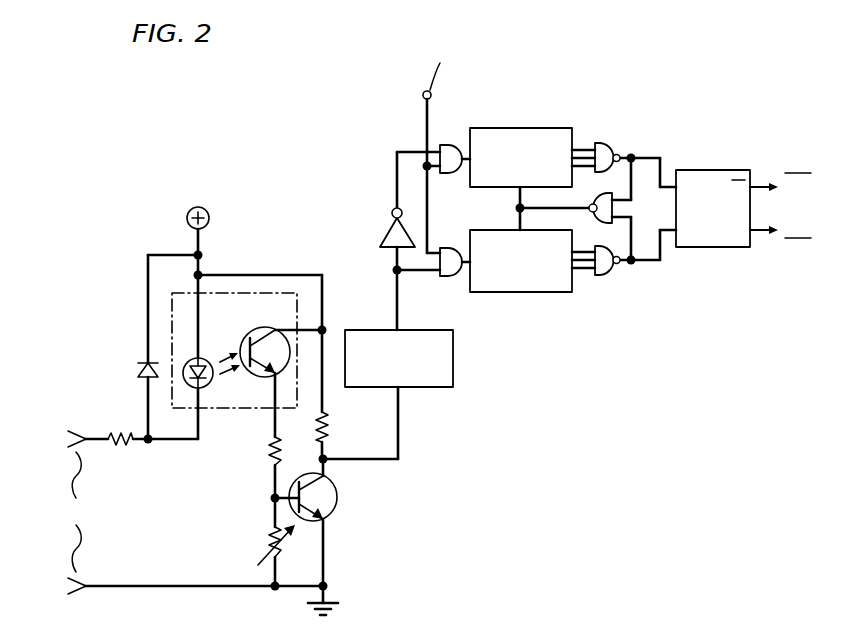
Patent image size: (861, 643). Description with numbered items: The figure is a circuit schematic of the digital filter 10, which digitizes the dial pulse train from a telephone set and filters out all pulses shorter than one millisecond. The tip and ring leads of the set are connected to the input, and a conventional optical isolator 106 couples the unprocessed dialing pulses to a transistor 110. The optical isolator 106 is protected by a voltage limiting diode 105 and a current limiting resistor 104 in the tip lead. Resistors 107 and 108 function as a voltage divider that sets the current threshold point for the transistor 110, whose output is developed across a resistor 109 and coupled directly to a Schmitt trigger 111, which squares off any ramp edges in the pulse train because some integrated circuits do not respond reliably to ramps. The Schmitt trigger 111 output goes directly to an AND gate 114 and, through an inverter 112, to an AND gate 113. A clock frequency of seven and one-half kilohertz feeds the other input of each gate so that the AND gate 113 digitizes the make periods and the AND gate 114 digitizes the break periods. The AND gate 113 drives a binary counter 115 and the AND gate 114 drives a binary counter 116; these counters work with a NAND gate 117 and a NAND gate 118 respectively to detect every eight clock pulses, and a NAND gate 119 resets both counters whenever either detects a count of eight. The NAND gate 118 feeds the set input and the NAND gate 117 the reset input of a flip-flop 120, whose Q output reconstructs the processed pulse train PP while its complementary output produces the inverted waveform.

The digital filter 10 is at (265, 82).
The current limiting resistor 104 is at (124, 455).
The voltage limiting diode 105 is at (137, 367).
The optical isolator 106 is at (252, 374).
The resistor 107 is at (268, 452).
The resistor 108 is at (265, 540).
The resistor 109 is at (333, 420).
The transistor 110 is at (338, 498).
The Schmitt trigger 111 is at (435, 388).
The inverter 112 is at (386, 228).
The AND gate 113 is at (450, 175).
The AND gate 114 is at (452, 279).
The binary counter 115 is at (508, 128).
The binary counter 116 is at (520, 292).
The NAND gate 117 is at (605, 143).
The NAND gate 118 is at (600, 276).
The NAND gate 119 is at (588, 207).
The flip-flop 120 is at (723, 168).